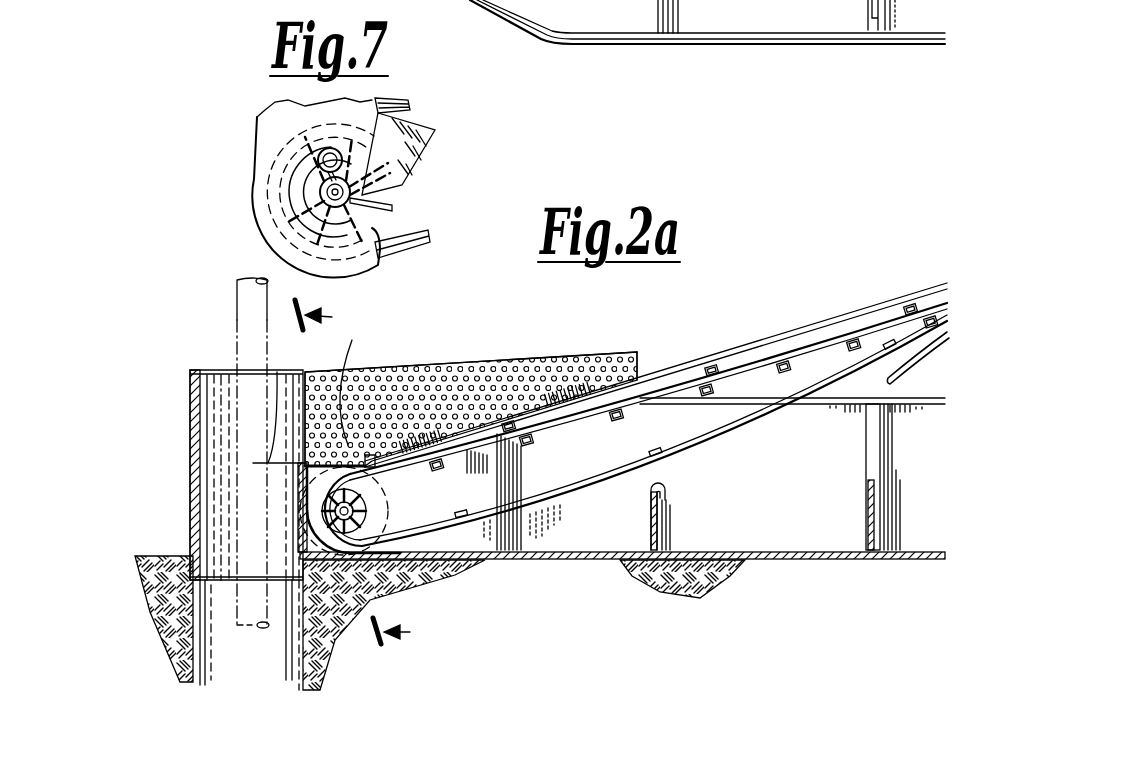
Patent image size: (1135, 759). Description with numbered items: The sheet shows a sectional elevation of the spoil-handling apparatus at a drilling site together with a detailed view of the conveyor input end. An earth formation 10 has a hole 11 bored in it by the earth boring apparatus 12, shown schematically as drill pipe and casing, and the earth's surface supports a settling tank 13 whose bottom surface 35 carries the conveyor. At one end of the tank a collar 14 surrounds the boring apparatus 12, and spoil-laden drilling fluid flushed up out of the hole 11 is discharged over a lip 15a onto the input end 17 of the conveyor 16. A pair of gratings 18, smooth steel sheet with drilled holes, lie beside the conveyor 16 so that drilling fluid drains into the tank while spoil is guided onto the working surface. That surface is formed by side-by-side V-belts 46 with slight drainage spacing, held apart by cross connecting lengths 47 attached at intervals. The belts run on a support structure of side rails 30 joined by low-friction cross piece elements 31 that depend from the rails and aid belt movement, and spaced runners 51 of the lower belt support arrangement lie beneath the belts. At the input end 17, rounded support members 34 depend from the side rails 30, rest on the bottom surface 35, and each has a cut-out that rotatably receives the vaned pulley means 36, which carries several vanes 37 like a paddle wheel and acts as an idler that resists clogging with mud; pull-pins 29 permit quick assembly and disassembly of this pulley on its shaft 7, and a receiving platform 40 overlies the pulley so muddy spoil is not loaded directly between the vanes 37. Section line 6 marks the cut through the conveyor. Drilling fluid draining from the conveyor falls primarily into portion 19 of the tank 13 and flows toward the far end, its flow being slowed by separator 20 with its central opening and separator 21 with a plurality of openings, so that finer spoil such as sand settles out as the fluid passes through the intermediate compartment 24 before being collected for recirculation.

In FIG. 2A, the section line 6- 6 is at (345, 473).
In FIG. 2A, the sprocket shaft 7 is at (393, 505).
In FIG. 2A, the earth formation 10 is at (152, 617).
In FIG. 2A, the hole 11 is at (283, 677).
In FIG. 2A, the earth boring apparatus 12 is at (237, 316).
In FIG. 2A, the settling tank 13 is at (750, 560).
In FIG. 2A, the collar 14 is at (190, 472).
In FIG. 2A, the lip 15a is at (228, 418).
In FIG. 2A, the conveyor 16 is at (777, 312).
In FIG. 7, the input end 17 is at (259, 230).
In FIG. 2A, the input end 17 is at (356, 384).
In FIG. 2A, the gratings 18 is at (452, 370).
In FIG. 2A, the portion 19 is at (592, 526).
In FIG. 2A, the separator 20 is at (657, 515).
In FIG. 2A, the separator 21 is at (792, 474).
In FIG. 2A, the intermediate compartment 24 is at (786, 519).
In FIG. 7, the pull-pins 29 is at (308, 141).
In FIG. 2A, the side rails 30 is at (710, 356).
In FIG. 2A, the cross piece elements 31 is at (528, 443).
In FIG. 7, the support members 34 is at (252, 190).
In FIG. 2A, the bottom surface 35 is at (498, 560).
In FIG. 7, the vaned pulley means 36 is at (418, 162).
In FIG. 2A, the vaned pulley means 36 is at (378, 515).
In FIG. 7, the vanes 37 is at (390, 202).
In FIG. 2A, the receiving platform 40 is at (350, 462).
In FIG. 7, the V-belts 46 is at (430, 242).
In FIG. 2A, the V-belts 46 is at (720, 432).
In FIG. 2A, the cross connecting lengths 47 is at (512, 422).
In FIG. 2A, the runners 51 is at (898, 378).